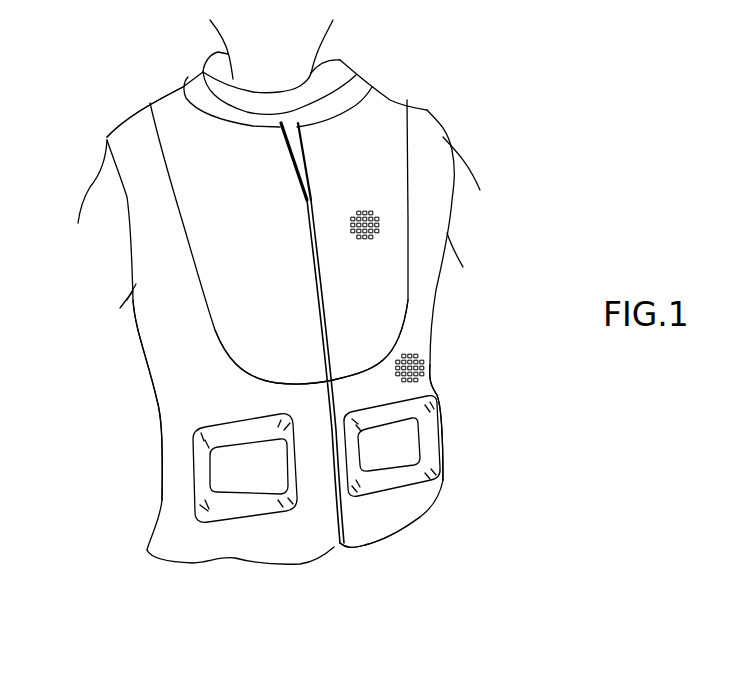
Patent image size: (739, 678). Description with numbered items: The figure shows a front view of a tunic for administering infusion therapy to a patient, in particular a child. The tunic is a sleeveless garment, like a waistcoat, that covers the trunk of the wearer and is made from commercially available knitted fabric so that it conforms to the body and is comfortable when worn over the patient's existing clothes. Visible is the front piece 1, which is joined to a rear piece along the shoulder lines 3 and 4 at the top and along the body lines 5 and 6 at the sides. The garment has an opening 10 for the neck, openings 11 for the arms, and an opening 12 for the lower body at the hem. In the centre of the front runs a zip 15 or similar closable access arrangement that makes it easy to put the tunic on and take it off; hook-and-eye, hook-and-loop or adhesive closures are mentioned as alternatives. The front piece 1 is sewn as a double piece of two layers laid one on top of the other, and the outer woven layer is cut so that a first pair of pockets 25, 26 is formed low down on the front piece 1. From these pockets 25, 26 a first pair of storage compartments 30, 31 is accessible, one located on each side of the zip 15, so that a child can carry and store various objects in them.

The front piece 1 is at (391, 121).
The shoulder line 3 is at (150, 102).
The shoulder line 4 is at (424, 110).
The body line 5 is at (153, 400).
The body line 6 is at (437, 388).
The opening for the neck 10 is at (337, 63).
The openings for the arms 11 is at (133, 284).
The opening for the lower body 12 is at (377, 540).
The zip 15 is at (302, 194).
The pocket 25 is at (287, 381).
The pocket 26 is at (363, 371).
The storage compartment 30 is at (225, 481).
The storage compartment 31 is at (410, 441).